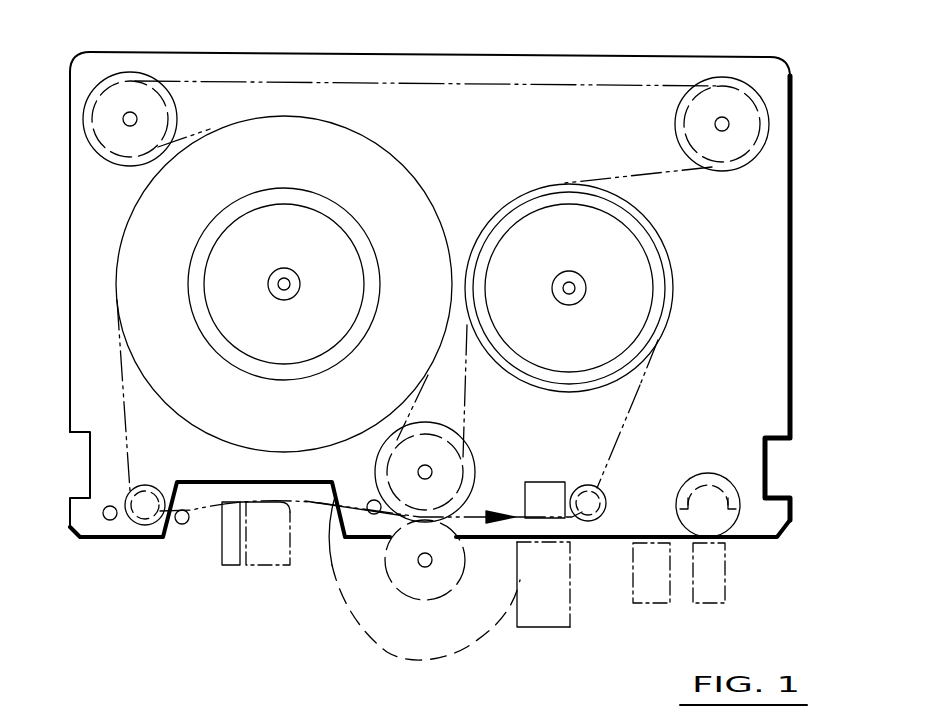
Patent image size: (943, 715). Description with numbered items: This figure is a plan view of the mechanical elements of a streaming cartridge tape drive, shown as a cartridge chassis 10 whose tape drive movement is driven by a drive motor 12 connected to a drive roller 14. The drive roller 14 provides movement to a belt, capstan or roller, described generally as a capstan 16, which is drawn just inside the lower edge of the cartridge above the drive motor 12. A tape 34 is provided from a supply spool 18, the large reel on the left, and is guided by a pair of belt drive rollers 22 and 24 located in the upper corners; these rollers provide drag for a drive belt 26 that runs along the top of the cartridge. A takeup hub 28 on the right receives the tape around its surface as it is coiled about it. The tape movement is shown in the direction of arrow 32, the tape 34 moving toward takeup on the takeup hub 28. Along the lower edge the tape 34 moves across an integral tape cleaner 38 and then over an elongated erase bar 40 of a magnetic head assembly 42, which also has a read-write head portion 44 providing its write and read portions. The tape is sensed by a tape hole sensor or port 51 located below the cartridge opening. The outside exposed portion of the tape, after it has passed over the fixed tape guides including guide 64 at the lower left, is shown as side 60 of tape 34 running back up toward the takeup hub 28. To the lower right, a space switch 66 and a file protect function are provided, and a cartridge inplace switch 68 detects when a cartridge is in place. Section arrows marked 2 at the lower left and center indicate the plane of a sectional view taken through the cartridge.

The tape cassette 10 is at (708, 49).
The drive motor 12 is at (397, 653).
The drive roller 14 is at (452, 590).
The capstan 16 is at (467, 450).
The supply spool 18 is at (338, 202).
The belt drive roller 22 is at (118, 73).
The belt drive roller 24 is at (768, 121).
The drive belt 26 is at (438, 83).
The takeup hub 28 is at (648, 268).
The arrow 32 is at (498, 508).
The tape 34 is at (130, 463).
The integral tape cleaner 38 is at (180, 525).
The elongated erase bar 40 is at (230, 565).
The magnetic head assembly 42 is at (258, 578).
The read-write head portion 44 is at (277, 565).
The tape hole sensor 51 is at (547, 628).
The side of tape 60 is at (638, 405).
The fixed tape guide 64 is at (140, 522).
The space switch 66 is at (737, 582).
The cartridge inplace switch 68 is at (650, 598).
The section line 2- 2 is at (55, 478).